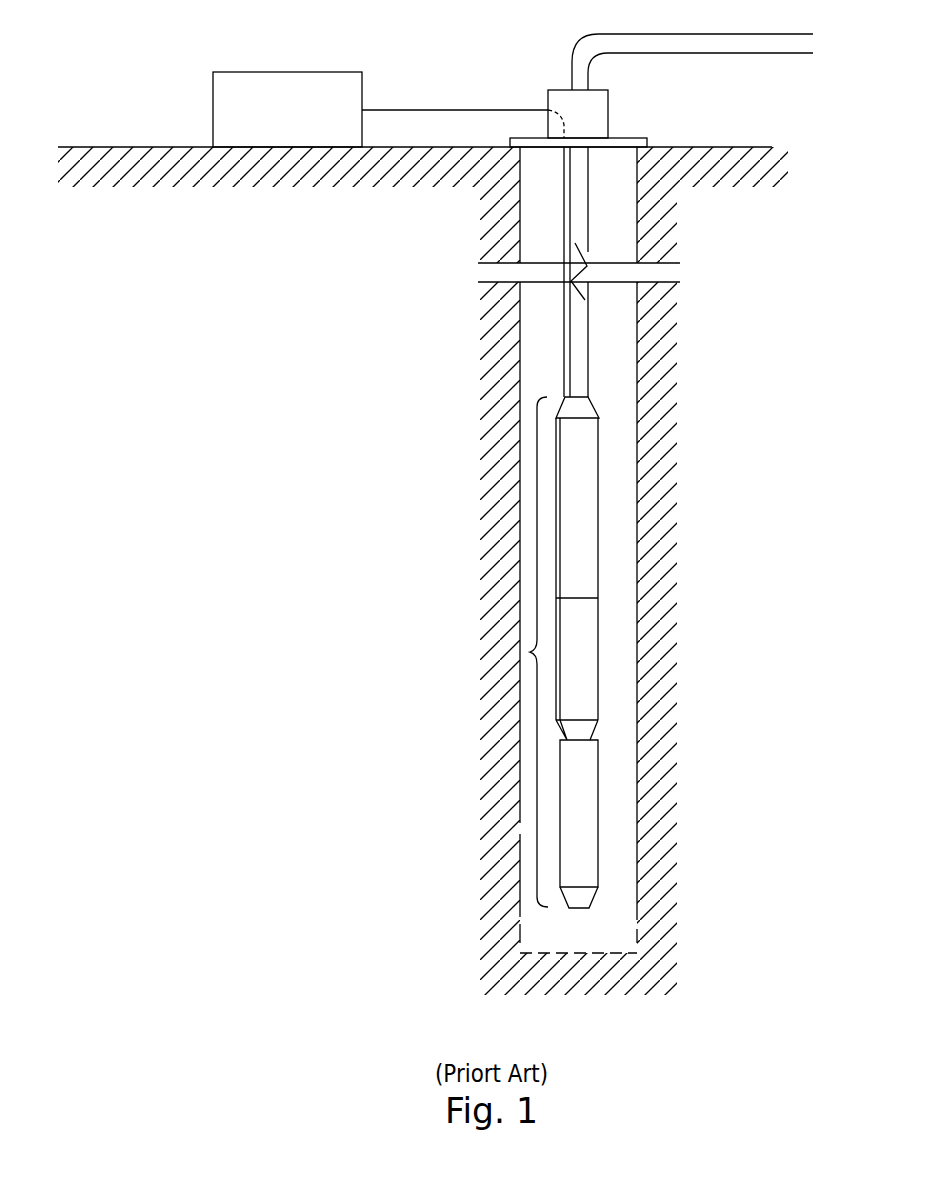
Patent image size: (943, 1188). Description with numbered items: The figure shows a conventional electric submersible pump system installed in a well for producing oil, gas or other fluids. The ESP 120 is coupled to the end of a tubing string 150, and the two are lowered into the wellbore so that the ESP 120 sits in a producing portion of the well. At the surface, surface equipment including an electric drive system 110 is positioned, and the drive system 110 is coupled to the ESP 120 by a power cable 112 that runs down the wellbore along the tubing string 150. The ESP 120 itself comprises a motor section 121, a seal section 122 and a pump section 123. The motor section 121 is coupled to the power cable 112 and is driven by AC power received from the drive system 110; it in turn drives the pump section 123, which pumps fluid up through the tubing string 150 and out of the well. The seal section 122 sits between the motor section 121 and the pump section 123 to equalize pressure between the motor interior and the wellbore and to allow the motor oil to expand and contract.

The electric drive system 110 is at (288, 72).
The power cable 112 is at (453, 108).
The ESP 120 is at (577, 652).
The motor section 121 is at (598, 827).
The seal section 122 is at (598, 650).
The pump section 123 is at (598, 497).
The tubing string 150 is at (588, 348).